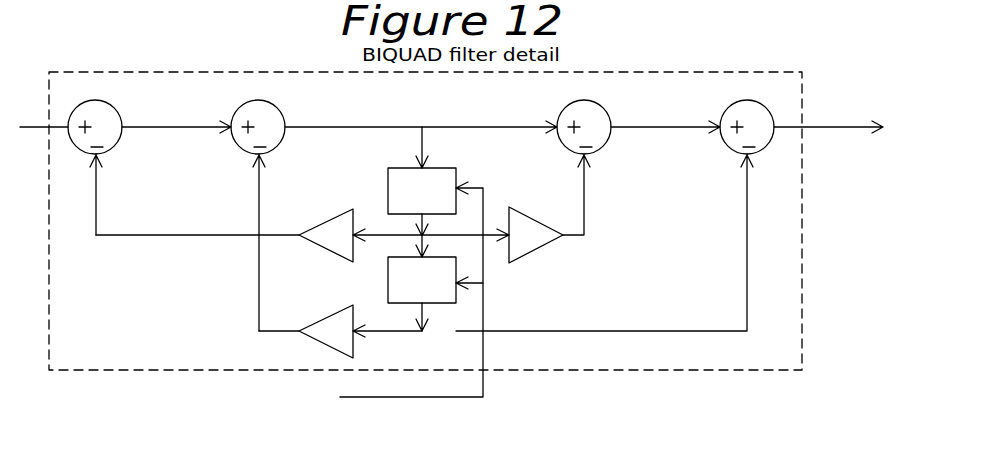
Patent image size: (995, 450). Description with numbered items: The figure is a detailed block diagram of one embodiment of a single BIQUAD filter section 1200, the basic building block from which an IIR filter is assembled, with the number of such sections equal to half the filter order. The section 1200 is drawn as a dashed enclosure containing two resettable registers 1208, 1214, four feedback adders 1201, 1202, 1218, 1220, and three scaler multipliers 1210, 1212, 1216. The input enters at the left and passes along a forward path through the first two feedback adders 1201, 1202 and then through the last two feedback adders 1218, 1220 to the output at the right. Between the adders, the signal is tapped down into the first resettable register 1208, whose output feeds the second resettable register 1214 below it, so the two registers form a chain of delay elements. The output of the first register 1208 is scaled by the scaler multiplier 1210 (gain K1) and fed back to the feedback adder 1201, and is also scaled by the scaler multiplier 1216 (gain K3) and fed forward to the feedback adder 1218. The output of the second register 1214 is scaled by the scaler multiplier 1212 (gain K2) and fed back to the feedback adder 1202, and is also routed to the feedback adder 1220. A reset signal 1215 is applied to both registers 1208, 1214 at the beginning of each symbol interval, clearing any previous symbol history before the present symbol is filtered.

The BIQUAD filter section 1200 is at (425, 209).
The feedback adder 1201 is at (104, 159).
The feedback adder 1202 is at (261, 207).
The resettable register 1208 is at (429, 192).
The scaler multiplier 1210 is at (224, 229).
The scaler multiplier 1212 is at (306, 325).
The resettable register 1214 is at (388, 272).
The reset signal 1215 is at (411, 302).
The scaler multiplier 1216 is at (548, 238).
The feedback adder 1218 is at (585, 159).
The feedback adder 1220 is at (617, 207).